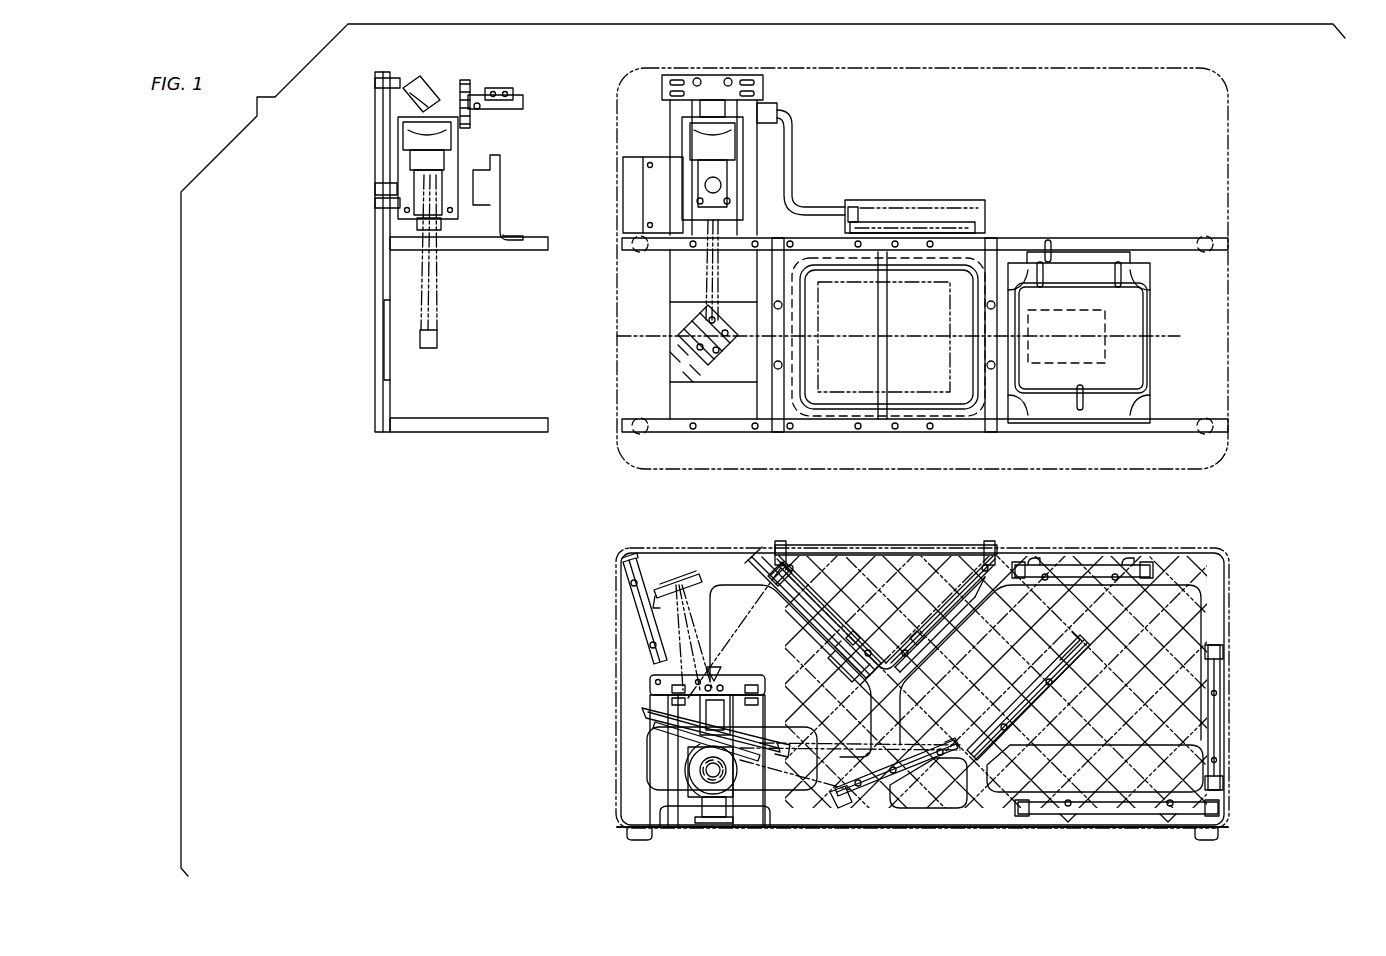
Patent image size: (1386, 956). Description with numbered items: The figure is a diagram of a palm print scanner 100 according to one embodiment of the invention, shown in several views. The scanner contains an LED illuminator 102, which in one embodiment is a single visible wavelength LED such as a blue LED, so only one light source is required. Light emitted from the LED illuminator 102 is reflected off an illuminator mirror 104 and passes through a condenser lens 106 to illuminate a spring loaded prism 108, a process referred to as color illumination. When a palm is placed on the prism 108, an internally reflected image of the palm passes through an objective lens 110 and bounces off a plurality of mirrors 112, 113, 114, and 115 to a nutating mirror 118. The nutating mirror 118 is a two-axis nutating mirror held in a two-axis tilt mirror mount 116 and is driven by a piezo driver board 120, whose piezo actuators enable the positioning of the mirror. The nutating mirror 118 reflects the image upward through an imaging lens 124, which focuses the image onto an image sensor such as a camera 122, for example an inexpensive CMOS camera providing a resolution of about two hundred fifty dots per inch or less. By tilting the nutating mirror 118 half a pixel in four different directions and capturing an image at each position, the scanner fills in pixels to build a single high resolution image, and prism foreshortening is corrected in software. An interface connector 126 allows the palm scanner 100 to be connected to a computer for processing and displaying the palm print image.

The palm print scanner 100 is at (1240, 106).
The LED illuminator 102 is at (665, 580).
The illuminator mirror 104 is at (660, 728).
The condenser lens 106 is at (760, 574).
The spring loaded prism 108 is at (851, 545).
The objective lens 110 is at (1062, 640).
The mirror 112 is at (1150, 815).
The mirror 113 is at (1222, 660).
The mirror 114 is at (1140, 566).
The mirror 115 is at (845, 805).
The two-axis tilt mirror mount 116 is at (703, 388).
The nutating mirror 118 is at (420, 82).
The piezo driver board 120 is at (903, 218).
The camera 122 is at (525, 104).
The imaging lens 124 is at (398, 160).
The interface connector 126 is at (640, 712).